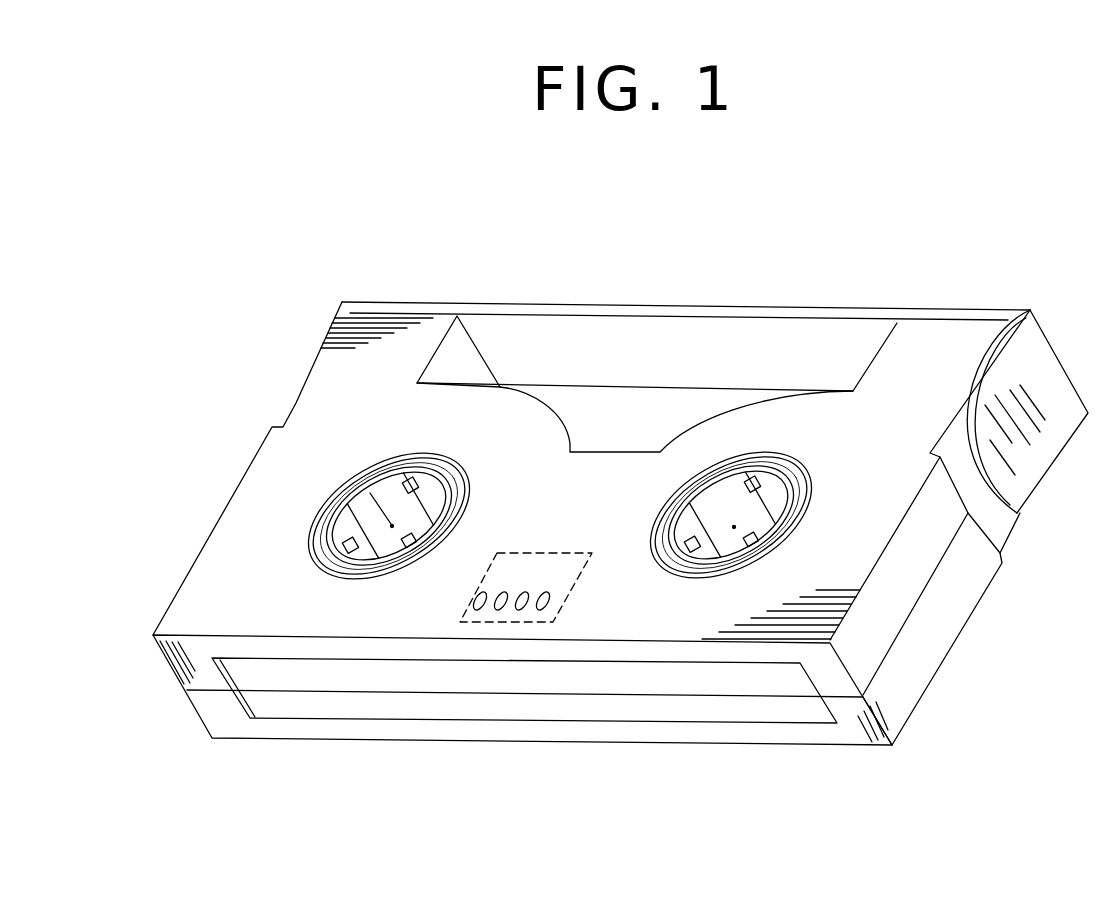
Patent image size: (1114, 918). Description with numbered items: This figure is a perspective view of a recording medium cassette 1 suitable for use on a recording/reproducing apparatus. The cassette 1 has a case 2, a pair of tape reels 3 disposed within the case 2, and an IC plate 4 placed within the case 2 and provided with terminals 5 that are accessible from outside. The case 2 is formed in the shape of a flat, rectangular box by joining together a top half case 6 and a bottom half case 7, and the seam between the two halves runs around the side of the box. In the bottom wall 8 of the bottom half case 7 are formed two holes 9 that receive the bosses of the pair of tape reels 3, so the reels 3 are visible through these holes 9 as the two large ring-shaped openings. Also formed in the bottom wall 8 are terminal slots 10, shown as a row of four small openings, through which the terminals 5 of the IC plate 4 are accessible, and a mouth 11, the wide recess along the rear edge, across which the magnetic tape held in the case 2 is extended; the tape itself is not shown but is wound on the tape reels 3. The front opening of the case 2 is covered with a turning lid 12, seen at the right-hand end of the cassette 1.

The recording medium cassette 1 is at (679, 292).
The case 2 is at (1062, 565).
The tape reels 3 is at (392, 470).
The IC plate 4 is at (477, 578).
The terminals 5 is at (553, 608).
The top half case 6 is at (972, 562).
The bottom half case 7 is at (915, 580).
The bottom wall 8 is at (940, 337).
The holes 9 is at (355, 493).
The terminal slots 10 is at (541, 642).
The mouth 11 is at (763, 332).
The turning lid 12 is at (1047, 377).